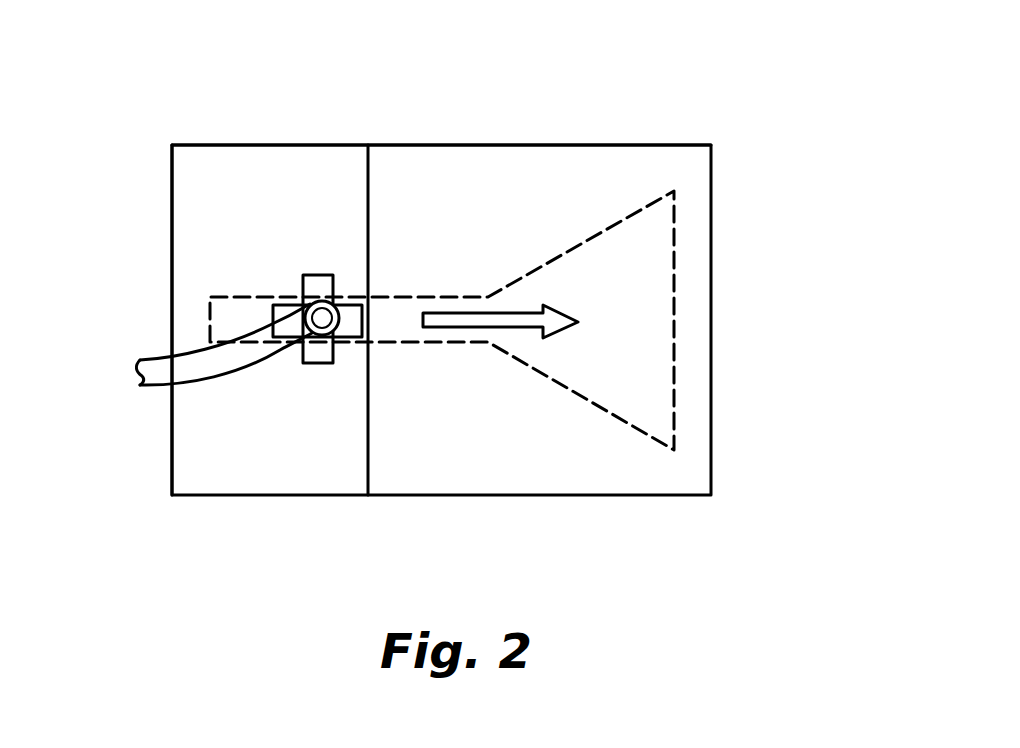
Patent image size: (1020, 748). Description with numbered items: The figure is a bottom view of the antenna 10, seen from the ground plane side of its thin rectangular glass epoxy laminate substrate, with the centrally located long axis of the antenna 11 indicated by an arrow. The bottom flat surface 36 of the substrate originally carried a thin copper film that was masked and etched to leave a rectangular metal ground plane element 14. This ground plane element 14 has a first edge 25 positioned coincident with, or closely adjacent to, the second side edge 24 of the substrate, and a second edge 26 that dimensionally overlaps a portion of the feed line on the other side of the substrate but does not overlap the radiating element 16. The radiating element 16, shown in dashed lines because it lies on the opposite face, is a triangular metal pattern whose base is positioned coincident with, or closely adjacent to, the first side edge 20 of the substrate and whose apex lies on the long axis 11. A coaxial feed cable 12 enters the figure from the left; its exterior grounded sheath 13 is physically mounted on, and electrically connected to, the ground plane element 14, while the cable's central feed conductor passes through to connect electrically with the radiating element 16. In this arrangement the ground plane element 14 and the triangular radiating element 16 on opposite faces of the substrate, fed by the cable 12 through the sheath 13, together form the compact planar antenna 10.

The antenna 10 is at (743, 115).
The antenna long axis 11 is at (521, 313).
The coaxial feed cable 12 is at (160, 380).
The grounded sheath 13 is at (305, 300).
The ground plane element 14 is at (200, 192).
The radiating element 16 is at (665, 312).
The first side edge 20 is at (712, 220).
The second side edge 24 is at (170, 158).
The first edge of ground plane element 25 is at (172, 285).
The second edge of ground plane element 26 is at (370, 191).
The bottom flat surface 36 is at (460, 460).